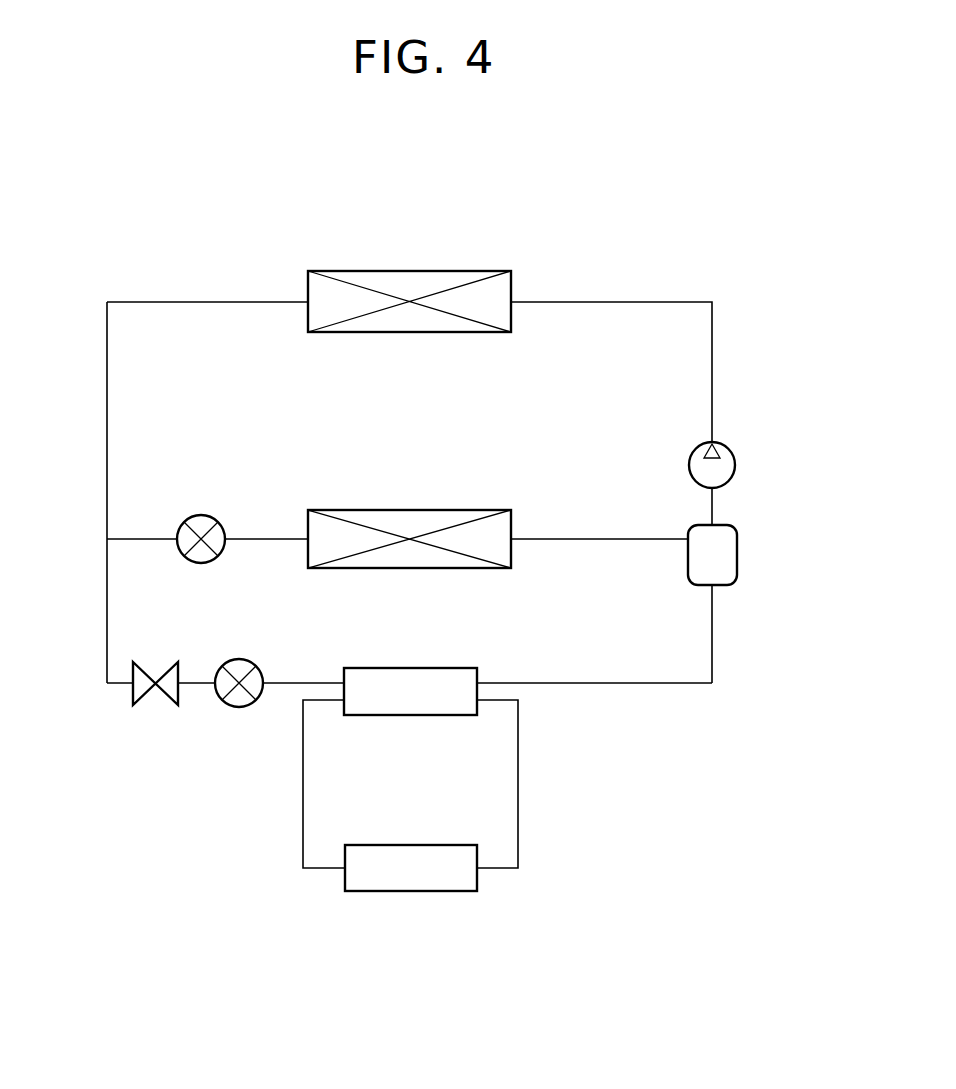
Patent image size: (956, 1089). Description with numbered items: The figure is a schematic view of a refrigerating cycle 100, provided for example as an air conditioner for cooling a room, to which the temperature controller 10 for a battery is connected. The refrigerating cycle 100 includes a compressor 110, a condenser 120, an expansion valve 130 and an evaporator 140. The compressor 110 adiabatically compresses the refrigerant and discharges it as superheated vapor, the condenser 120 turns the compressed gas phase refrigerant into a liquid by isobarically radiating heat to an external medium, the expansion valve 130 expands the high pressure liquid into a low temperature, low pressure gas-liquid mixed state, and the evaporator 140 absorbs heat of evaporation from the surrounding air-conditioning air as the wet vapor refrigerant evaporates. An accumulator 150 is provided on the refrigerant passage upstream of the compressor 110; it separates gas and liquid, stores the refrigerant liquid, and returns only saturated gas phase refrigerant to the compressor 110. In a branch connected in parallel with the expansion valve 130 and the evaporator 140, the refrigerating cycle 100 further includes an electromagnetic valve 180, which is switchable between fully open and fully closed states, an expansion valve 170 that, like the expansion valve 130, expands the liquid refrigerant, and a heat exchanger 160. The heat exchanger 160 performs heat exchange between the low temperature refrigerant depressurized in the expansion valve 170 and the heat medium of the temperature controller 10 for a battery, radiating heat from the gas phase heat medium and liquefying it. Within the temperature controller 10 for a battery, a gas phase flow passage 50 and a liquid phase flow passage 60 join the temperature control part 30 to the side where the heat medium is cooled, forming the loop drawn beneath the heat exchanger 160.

The refrigerating cycle 100 is at (690, 268).
The condenser 120 is at (408, 270).
The compressor 110 is at (736, 465).
The accumulator 150 is at (738, 553).
The expansion valve 130 is at (201, 515).
The evaporator 140 is at (408, 508).
The electromagnetic valve 180 is at (148, 706).
The expansion valve 170 is at (240, 708).
The heat exchanger 160 is at (408, 667).
The temperature controller for a battery 10 is at (427, 830).
The gas phase flow passage 50 is at (303, 805).
The liquid phase flow passage 60 is at (518, 805).
The temperature control part 30 is at (412, 893).